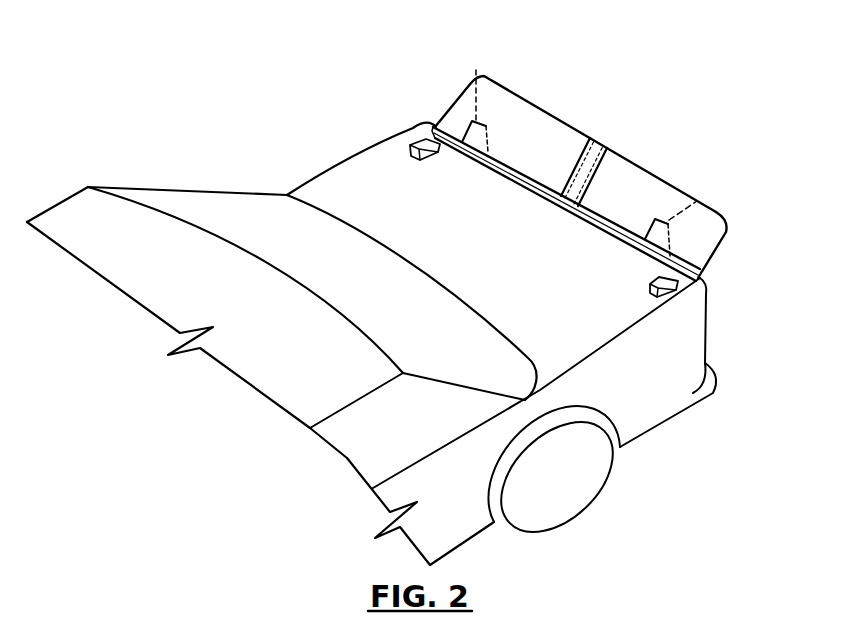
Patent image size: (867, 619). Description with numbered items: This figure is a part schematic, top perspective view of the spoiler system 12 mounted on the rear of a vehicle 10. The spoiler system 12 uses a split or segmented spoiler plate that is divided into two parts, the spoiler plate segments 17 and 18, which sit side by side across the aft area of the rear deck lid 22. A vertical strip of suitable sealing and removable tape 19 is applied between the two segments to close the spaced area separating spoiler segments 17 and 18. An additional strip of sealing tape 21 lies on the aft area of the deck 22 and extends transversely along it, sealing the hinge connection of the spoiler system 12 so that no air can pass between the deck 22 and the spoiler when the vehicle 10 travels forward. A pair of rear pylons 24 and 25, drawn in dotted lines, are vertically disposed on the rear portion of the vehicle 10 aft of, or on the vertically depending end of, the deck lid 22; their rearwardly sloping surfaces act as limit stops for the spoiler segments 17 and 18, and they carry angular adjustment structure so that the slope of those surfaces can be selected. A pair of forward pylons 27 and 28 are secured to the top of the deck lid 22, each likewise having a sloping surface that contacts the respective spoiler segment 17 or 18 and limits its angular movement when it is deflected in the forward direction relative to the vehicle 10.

The vehicle 10 is at (723, 376).
The spoiler system 12 is at (580, 173).
The spoiler plate segment 17 is at (513, 106).
The spoiler plate segment 18 is at (638, 175).
The sealing and removable tape 19 is at (597, 142).
The sealing tape 21 is at (512, 178).
The deck lid 22 is at (496, 261).
The rear pylon 24 is at (476, 70).
The rear pylon 25 is at (697, 201).
The forward pylon 27 is at (425, 141).
The forward pylon 28 is at (649, 290).